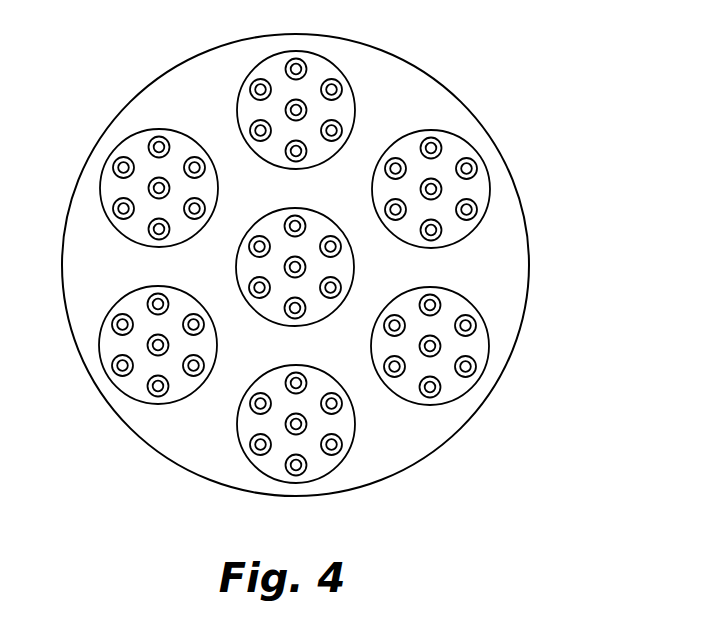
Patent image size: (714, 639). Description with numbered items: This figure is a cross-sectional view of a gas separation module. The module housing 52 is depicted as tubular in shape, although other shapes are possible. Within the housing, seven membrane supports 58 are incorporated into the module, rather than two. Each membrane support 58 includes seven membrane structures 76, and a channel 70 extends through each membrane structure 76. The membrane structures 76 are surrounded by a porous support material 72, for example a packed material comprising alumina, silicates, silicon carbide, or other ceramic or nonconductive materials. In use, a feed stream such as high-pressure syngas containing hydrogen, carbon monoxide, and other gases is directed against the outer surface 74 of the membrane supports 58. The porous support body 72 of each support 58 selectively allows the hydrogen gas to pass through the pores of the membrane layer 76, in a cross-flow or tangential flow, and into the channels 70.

The module housing 52 is at (150, 83).
The membrane support 58 is at (294, 272).
The channel 70 is at (335, 90).
The porous support material 72 is at (277, 67).
The outer surface 74 is at (357, 110).
The membrane structure 76 is at (305, 63).